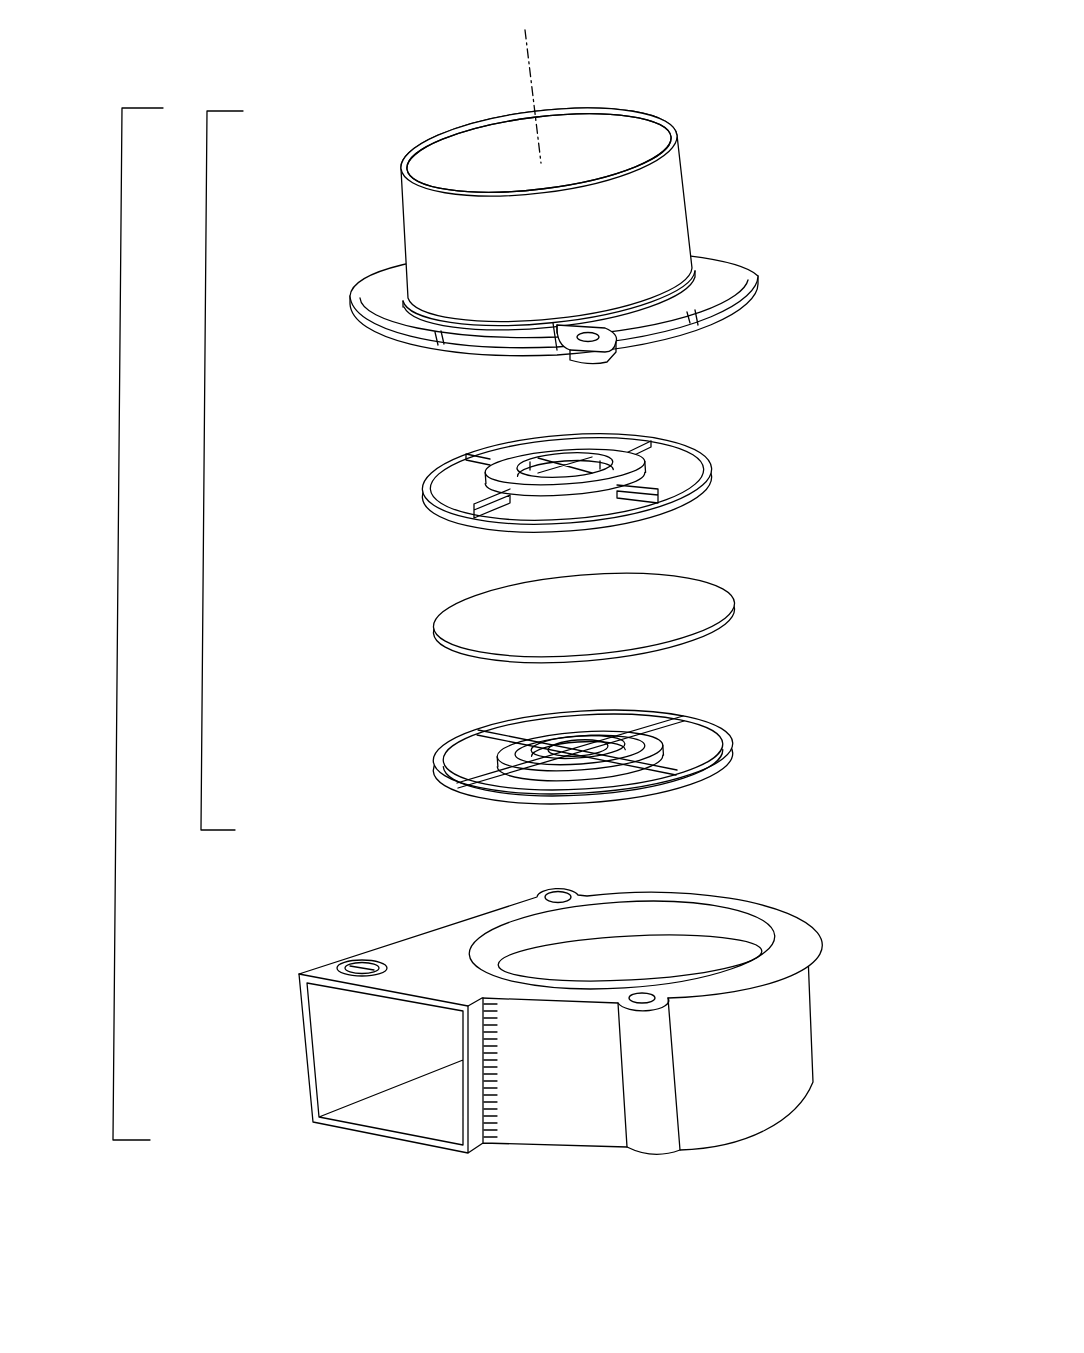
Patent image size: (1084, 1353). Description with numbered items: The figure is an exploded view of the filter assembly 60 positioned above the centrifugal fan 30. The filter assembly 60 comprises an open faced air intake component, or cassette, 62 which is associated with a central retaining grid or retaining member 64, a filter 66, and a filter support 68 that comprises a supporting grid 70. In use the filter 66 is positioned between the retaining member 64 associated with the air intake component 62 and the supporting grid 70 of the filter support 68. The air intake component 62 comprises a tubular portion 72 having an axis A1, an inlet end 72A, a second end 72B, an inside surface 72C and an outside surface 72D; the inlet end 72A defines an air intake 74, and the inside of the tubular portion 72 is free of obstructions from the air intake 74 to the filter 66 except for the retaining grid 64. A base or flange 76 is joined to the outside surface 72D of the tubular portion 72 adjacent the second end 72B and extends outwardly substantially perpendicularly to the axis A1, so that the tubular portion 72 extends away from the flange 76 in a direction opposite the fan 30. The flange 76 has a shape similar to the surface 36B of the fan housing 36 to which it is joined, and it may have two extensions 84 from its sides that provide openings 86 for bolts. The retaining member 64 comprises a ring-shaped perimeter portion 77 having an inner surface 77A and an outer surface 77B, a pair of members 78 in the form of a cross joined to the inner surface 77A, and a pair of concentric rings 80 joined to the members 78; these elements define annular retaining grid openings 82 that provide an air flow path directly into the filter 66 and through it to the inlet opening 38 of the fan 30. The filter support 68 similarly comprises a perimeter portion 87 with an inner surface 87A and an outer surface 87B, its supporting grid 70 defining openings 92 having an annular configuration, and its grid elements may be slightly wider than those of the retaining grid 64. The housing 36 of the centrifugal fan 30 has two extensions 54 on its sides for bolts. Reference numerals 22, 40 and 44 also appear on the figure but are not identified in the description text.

The filter cartridge assembly 22 is at (118, 588).
The filter assembly 60 is at (204, 460).
The open faced air intake component 62 is at (835, 222).
The tubular portion 72 is at (664, 215).
The inlet end 72A is at (679, 134).
The second end 72B is at (428, 313).
The inside surface 72C is at (441, 157).
The outside surface 72D is at (428, 236).
The air intake 74 is at (578, 146).
The flange 76 is at (740, 250).
The extensions 84 is at (618, 342).
The openings 86 is at (553, 322).
The axis A1 is at (533, 75).
The retaining grid 64 is at (772, 453).
The perimeter portion 77 is at (712, 480).
The inner surface 77A is at (687, 448).
The outer surface 77B is at (700, 494).
The members in the form of a cross 78 is at (502, 502).
The concentric rings 80 is at (574, 458).
The retaining grid openings 82 is at (452, 486).
The filter 66 is at (683, 613).
The filter support 68 is at (810, 716).
The perimeter portion 87 is at (438, 760).
The inner surface 87A is at (697, 722).
The outer surface 87B is at (722, 768).
The supporting grid 70 is at (481, 763).
The openings 92 is at (696, 742).
The centrifugal fan 30 is at (838, 927).
The housing 36 is at (793, 1043).
The surface 36B is at (420, 958).
The inlet opening 38 is at (736, 934).
The bore 44 is at (625, 965).
The outlet duct 40 is at (390, 1058).
The extensions 54 is at (538, 893).